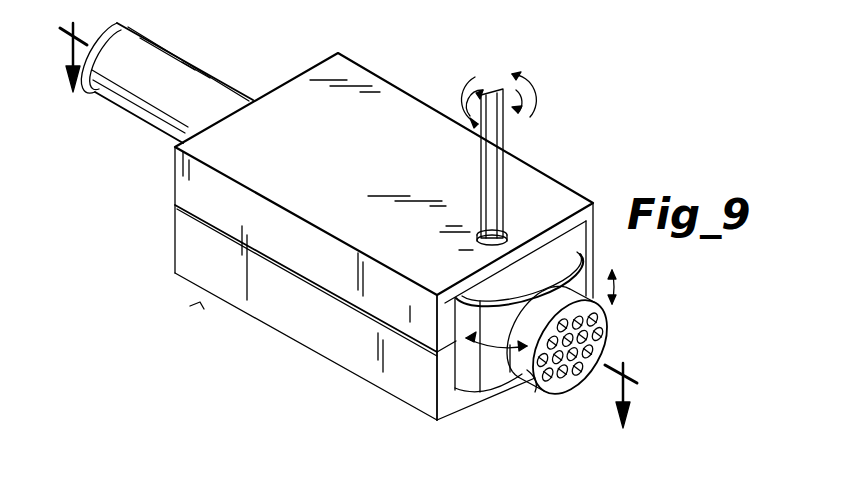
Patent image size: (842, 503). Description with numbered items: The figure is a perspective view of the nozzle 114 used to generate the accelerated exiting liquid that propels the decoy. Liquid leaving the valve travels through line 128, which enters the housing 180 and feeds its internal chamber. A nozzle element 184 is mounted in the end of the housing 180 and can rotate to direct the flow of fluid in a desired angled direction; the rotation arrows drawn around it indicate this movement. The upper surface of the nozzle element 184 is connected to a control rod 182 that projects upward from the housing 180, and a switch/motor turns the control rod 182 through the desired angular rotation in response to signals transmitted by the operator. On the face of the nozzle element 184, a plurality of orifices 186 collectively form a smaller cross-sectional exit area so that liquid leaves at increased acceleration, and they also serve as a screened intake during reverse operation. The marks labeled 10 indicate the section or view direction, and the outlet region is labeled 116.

The section line / viewing direction 10 is at (351, 246).
The nozzle 114 is at (192, 304).
The outlet 116 is at (528, 370).
The line 128 is at (251, 31).
The housing 180 is at (379, 167).
The control rod 182 is at (500, 137).
The nozzle element 184 is at (553, 253).
The orifices 186 is at (590, 345).